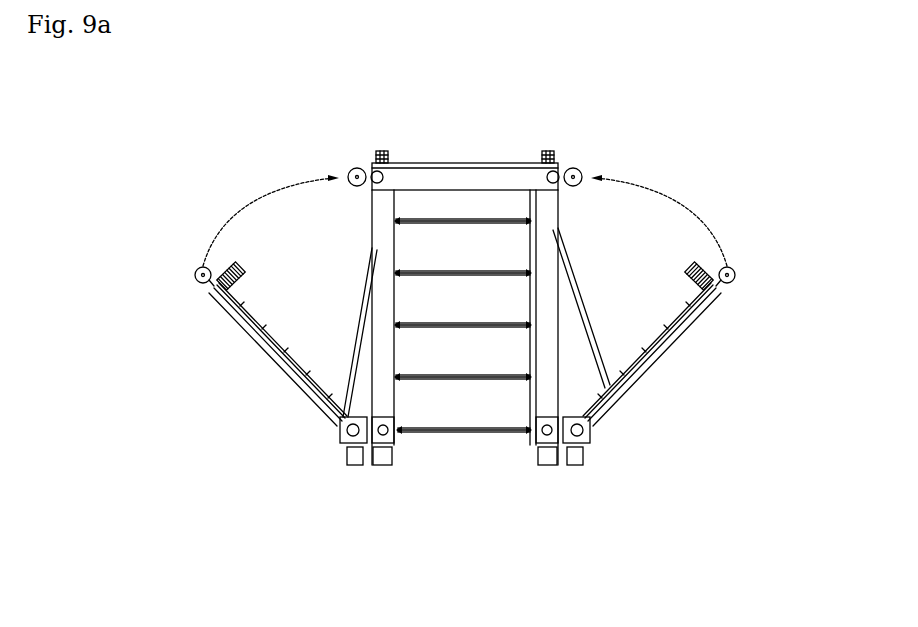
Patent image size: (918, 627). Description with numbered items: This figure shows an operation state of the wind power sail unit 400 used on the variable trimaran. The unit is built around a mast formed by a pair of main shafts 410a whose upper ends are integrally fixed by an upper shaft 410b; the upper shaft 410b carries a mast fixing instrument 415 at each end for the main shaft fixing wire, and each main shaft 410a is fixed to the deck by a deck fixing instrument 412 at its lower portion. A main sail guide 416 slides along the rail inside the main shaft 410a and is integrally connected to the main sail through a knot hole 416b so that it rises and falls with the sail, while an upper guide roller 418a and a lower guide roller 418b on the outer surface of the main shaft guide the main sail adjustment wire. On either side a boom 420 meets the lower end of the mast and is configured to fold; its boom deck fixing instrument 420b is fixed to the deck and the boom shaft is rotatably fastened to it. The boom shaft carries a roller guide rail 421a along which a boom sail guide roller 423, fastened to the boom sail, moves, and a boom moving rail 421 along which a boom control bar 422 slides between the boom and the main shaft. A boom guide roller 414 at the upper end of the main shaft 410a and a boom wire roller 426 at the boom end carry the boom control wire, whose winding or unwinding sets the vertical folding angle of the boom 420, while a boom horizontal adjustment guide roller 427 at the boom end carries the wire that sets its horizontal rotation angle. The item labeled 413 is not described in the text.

The wind power sail unit 400 is at (237, 80).
The main shaft 410a is at (350, 238).
The upper shaft 410b is at (423, 152).
The deck fixing instrument 412 is at (393, 462).
The foot 413 is at (560, 466).
The boom guide roller 414 is at (353, 167).
The mast fixing instrument 415 is at (385, 150).
The main sail guide 416 is at (452, 218).
The knot hole 416b is at (532, 208).
The upper guide roller 418a is at (548, 150).
The lower guide roller 418b is at (410, 438).
The boom 420 is at (467, 347).
The boom deck fixing instrument 420b is at (345, 458).
The boom moving rail 421 is at (670, 320).
The roller guide rail 421a is at (240, 325).
The boom control bar 422 is at (356, 310).
The boom sail guide roller 423 is at (255, 345).
The boom wire roller 426 is at (222, 284).
The boom horizontal adjustment guide roller 427 is at (195, 277).